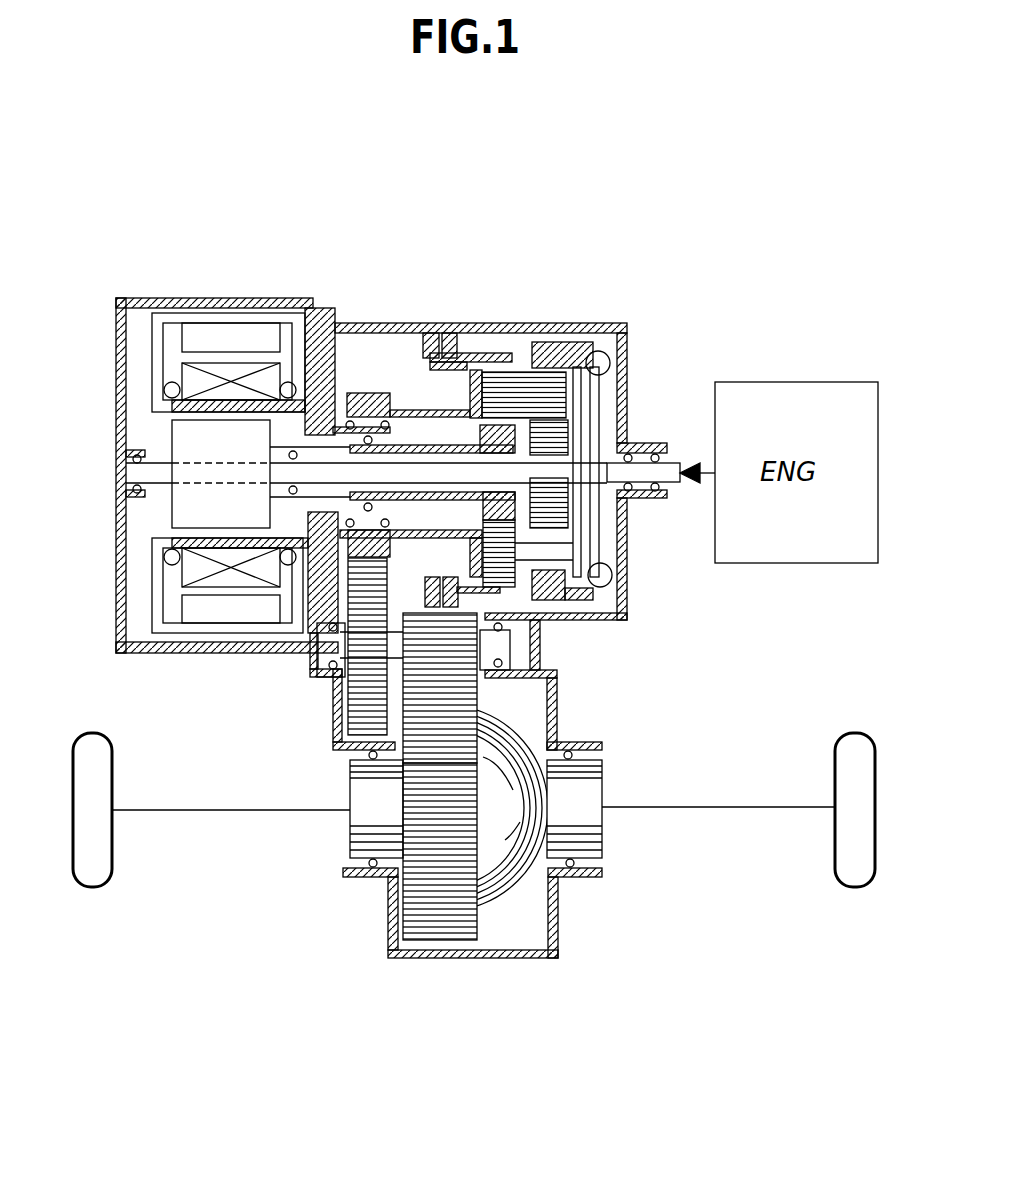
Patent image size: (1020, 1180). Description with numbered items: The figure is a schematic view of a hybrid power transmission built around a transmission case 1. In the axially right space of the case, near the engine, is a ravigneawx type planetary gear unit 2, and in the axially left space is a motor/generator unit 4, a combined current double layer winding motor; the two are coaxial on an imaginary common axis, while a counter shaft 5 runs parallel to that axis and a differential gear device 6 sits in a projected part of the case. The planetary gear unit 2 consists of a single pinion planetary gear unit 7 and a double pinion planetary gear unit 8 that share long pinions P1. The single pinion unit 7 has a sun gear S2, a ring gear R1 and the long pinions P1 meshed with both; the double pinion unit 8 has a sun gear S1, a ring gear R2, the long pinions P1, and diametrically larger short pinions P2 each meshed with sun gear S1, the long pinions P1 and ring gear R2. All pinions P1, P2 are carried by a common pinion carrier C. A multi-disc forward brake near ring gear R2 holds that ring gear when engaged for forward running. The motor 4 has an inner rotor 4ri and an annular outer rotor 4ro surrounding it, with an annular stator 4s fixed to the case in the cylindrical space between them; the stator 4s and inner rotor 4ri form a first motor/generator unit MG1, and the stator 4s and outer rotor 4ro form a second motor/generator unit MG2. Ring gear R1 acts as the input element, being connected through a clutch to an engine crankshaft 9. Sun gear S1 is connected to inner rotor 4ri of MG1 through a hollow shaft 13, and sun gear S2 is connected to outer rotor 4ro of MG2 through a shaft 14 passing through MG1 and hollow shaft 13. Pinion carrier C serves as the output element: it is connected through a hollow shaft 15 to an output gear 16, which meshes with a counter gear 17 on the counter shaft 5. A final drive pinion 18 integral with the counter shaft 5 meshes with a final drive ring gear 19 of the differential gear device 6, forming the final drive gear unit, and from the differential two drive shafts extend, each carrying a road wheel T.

The transmission case 1 is at (506, 372).
The ravigneawx type planetary gear unit 2 is at (586, 325).
The motor/generator unit 4 is at (175, 301).
The outer rotor 4ro is at (235, 335).
The annular stator 4s is at (190, 380).
The inner rotor 4ri is at (188, 440).
The counter shaft 5 is at (502, 650).
The differential gear device 6 is at (510, 845).
The single pinion planetary gear unit 7 is at (599, 351).
The double pinion planetary gear unit 8 is at (493, 326).
The engine crankshaft 9 is at (668, 466).
The hollow shaft 13 is at (403, 446).
The shaft 14 is at (338, 473).
The hollow shaft 15 is at (370, 393).
The output gear 16 is at (415, 410).
The counter gear 17 is at (358, 700).
The final drive pinion 18 is at (433, 653).
The final drive ring gear 19 is at (440, 908).
The first motor/generator unit MG1 is at (165, 512).
The second motor/generator unit MG2 is at (173, 593).
The sun gear S1 is at (478, 422).
The sun gear S2 is at (552, 483).
The ring gear R1 is at (549, 353).
The ring gear R2 is at (503, 425).
The long pinions P1 is at (547, 392).
The short pinions P2 is at (496, 553).
The pinion carrier C is at (583, 546).
The road wheel T is at (97, 850).